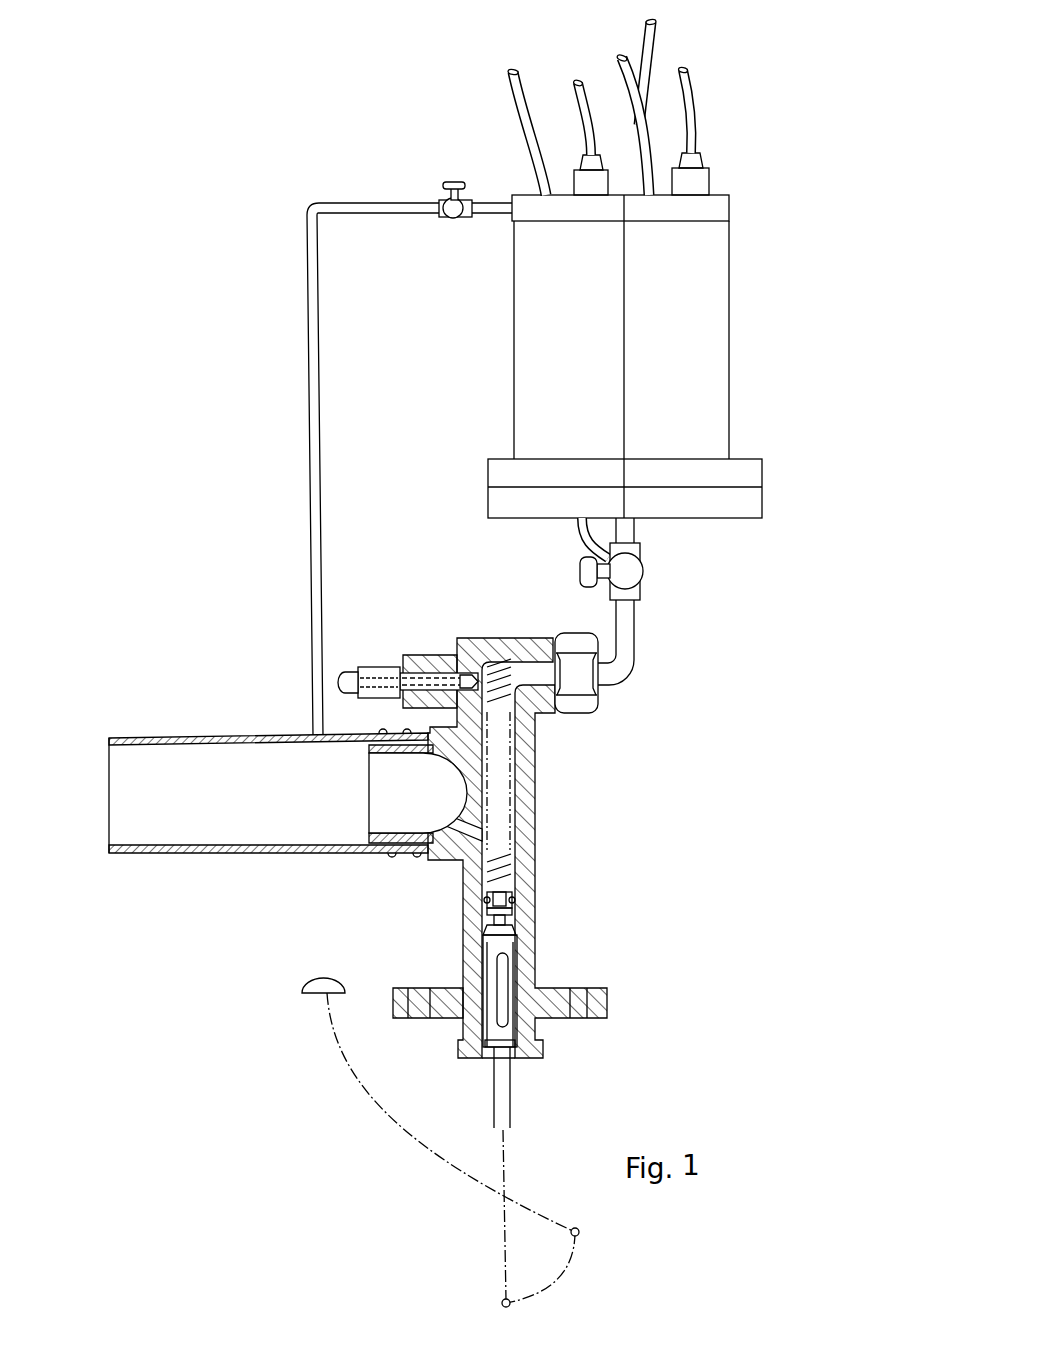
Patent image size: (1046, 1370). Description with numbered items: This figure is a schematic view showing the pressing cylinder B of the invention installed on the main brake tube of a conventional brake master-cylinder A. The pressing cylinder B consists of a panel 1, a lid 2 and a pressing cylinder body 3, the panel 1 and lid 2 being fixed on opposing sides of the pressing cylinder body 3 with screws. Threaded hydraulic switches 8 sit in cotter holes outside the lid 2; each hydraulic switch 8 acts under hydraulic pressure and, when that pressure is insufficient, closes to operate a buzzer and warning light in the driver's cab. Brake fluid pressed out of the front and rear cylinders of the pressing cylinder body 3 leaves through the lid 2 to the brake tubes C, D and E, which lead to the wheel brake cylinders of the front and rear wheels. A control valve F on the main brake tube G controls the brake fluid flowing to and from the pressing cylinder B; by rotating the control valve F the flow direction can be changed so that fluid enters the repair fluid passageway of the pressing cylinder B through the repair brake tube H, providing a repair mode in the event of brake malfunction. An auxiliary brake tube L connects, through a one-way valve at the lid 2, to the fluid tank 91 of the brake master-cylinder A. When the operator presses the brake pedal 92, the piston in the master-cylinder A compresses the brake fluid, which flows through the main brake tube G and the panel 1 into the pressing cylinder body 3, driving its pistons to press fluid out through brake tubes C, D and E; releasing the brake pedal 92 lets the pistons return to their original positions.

The brake master-cylinder A is at (555, 827).
The pressing cylinder B is at (636, 337).
The panel 1 is at (505, 505).
The lid 2 is at (730, 207).
The pressing cylinder body 3 is at (533, 360).
The hydraulic switch 8 is at (587, 182).
The brake tube C is at (512, 103).
The brake tube D is at (625, 78).
The brake tube E is at (653, 35).
The auxiliary brake tube L is at (400, 203).
The main brake tube G is at (630, 530).
The repair brake tube H is at (587, 535).
The control valve F is at (635, 568).
The fluid tank 91 is at (215, 733).
The brake pedal 92 is at (308, 993).